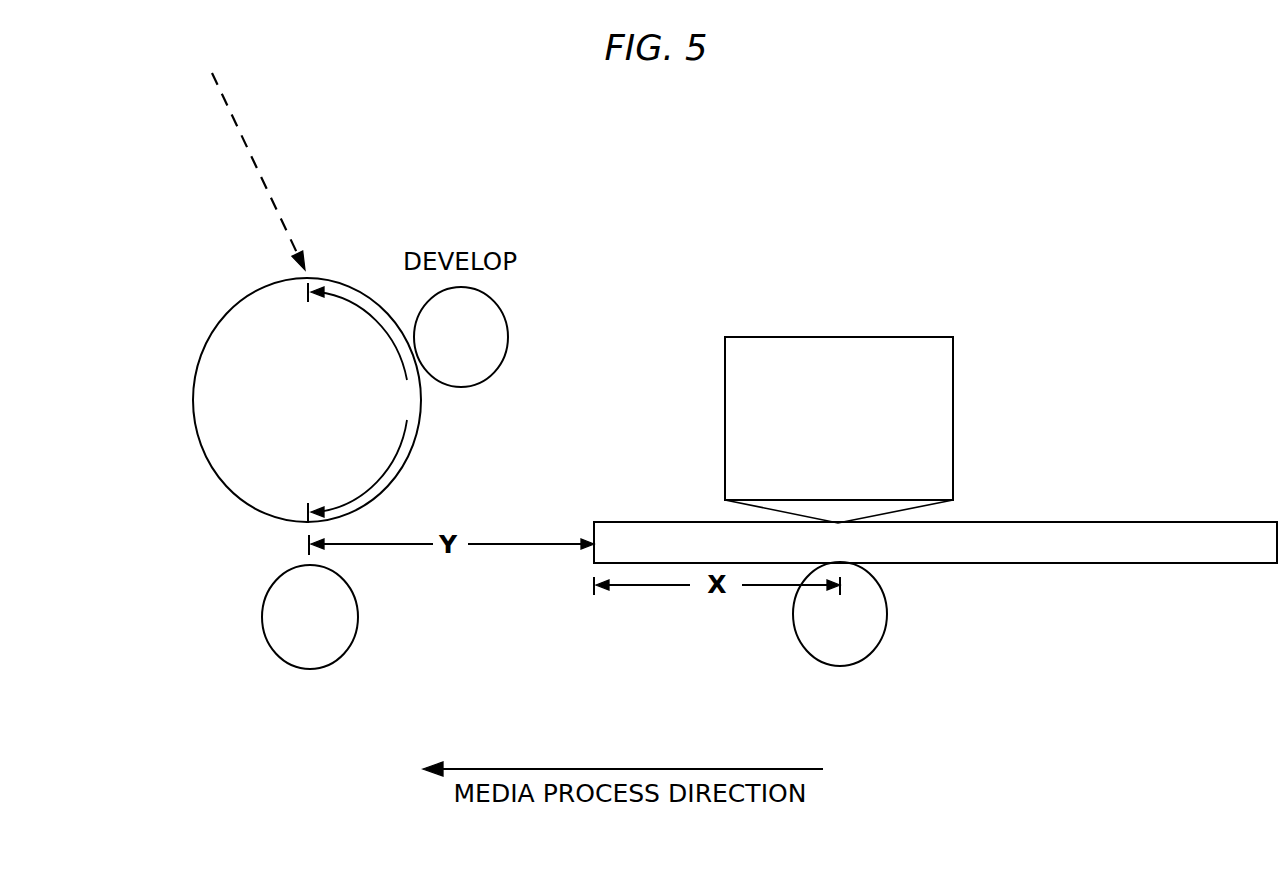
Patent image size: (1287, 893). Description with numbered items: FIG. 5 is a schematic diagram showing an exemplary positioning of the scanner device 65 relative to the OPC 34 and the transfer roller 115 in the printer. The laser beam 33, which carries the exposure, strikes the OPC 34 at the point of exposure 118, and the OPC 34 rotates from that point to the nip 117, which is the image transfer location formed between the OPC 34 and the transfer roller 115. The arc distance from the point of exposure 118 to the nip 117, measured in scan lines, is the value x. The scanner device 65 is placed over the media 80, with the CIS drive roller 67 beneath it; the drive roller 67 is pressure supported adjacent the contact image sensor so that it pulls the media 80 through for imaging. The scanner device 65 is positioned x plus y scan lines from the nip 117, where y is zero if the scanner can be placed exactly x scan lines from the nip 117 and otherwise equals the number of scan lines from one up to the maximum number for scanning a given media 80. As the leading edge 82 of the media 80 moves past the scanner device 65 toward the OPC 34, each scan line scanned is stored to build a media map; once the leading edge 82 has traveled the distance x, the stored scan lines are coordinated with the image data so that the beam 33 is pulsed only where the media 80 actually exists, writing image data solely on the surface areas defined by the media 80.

The laser beam 33 is at (248, 152).
The OPC 34 is at (196, 380).
The point of exposure 118 is at (316, 260).
The nip 117 is at (282, 559).
The transfer roller 115 is at (267, 640).
The scanner device 65 is at (882, 337).
The media 80 is at (1040, 521).
The leading edge 82 is at (600, 504).
The CIS drive roller 67 is at (888, 612).